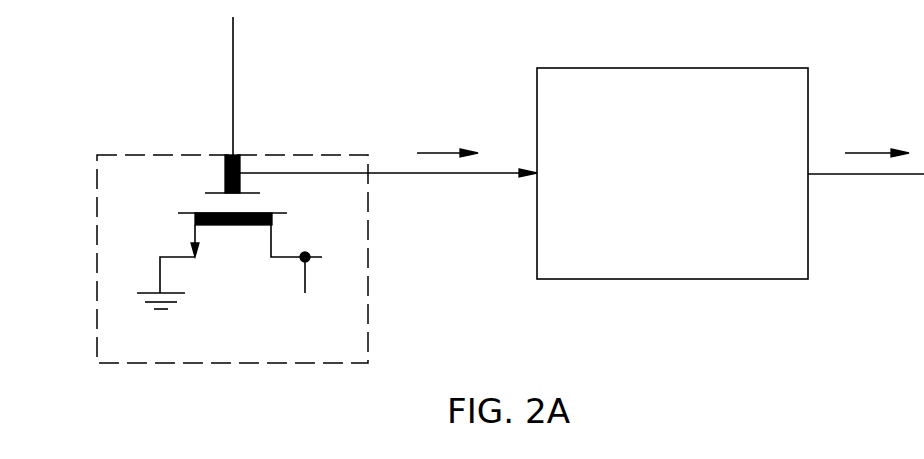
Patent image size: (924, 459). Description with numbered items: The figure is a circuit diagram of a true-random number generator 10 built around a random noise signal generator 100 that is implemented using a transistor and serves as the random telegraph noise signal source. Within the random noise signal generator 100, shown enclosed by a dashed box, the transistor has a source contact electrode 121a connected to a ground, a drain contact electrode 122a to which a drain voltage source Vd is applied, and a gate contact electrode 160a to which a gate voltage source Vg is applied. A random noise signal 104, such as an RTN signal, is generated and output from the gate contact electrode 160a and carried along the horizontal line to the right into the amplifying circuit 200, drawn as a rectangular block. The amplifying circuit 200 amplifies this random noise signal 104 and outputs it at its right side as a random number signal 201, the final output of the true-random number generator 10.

The true-random number generator 10 is at (35, 60).
The random noise signal generator 100 is at (96, 261).
The random noise signal 104 is at (438, 152).
The source contact electrode 121a is at (186, 256).
The drain contact electrode 122a is at (284, 256).
The gate contact electrode 160a is at (225, 160).
The amplifying circuit 200 is at (672, 68).
The random number signal 201 is at (867, 152).